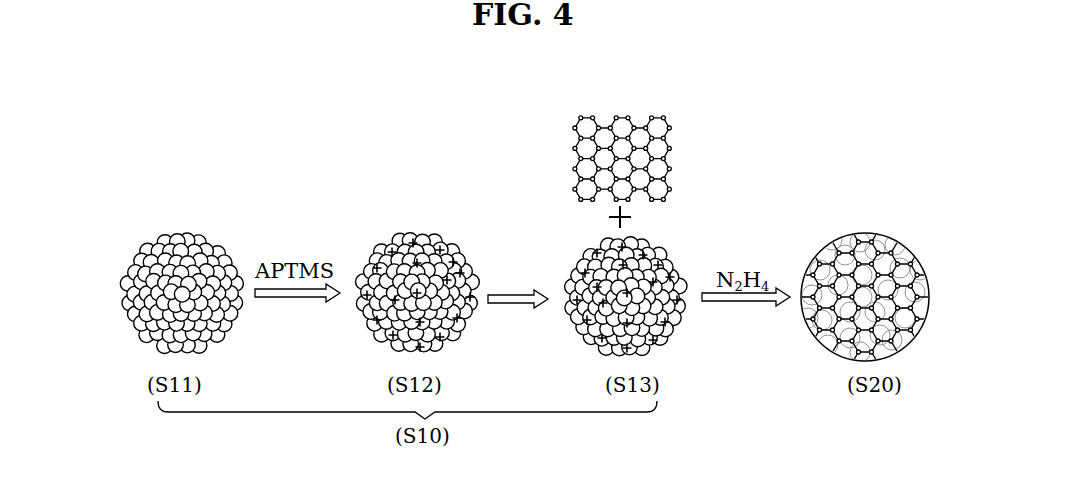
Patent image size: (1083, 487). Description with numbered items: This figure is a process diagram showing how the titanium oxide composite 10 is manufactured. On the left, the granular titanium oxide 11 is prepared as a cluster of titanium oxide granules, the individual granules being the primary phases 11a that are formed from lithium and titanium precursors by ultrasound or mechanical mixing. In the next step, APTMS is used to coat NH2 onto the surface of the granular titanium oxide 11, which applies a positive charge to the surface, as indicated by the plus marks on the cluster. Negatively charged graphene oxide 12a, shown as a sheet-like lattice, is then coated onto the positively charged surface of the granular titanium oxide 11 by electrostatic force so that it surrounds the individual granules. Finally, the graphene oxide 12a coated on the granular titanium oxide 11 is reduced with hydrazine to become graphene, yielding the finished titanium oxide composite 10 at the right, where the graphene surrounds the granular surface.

The titanium oxide composite 10 is at (840, 223).
The granular titanium oxide 11 is at (399, 251).
The primary phases 11a is at (153, 253).
The graphene oxide 12a is at (570, 140).